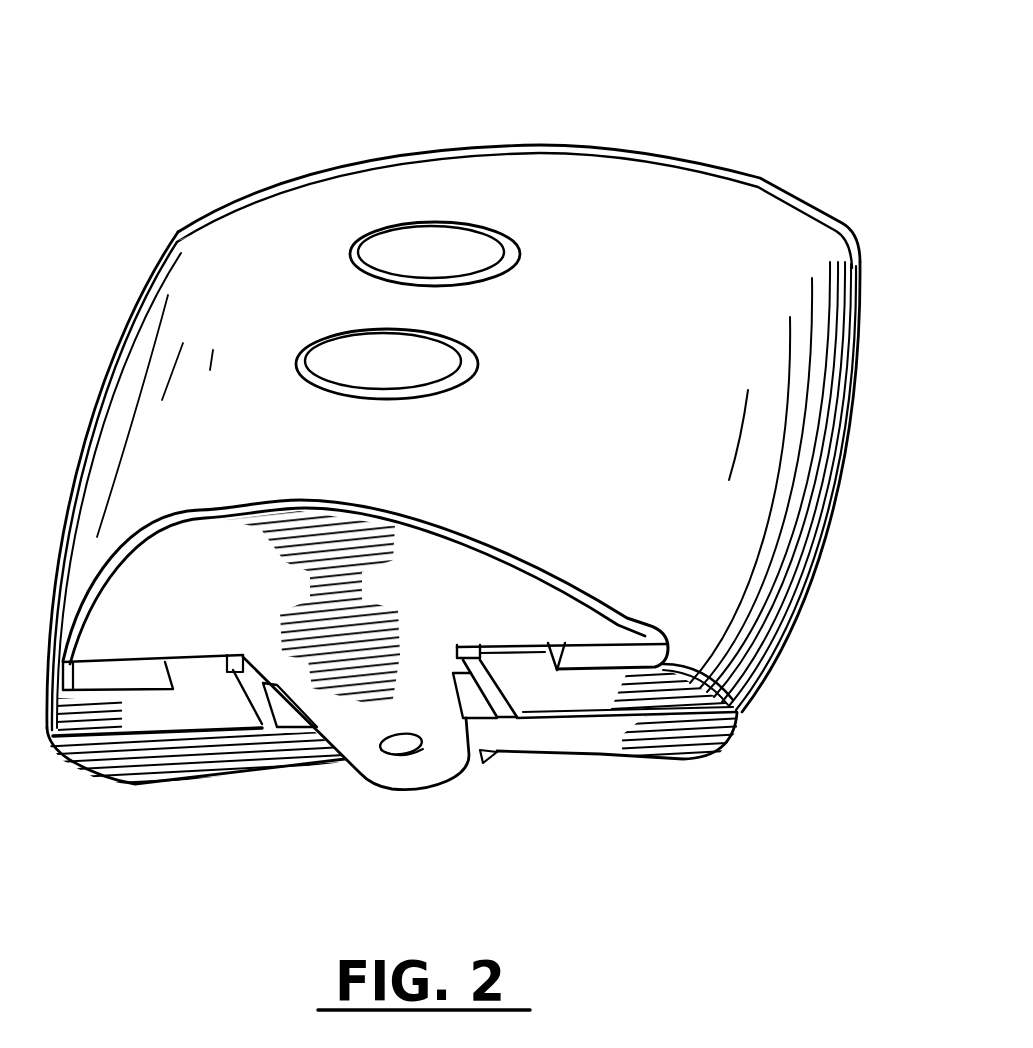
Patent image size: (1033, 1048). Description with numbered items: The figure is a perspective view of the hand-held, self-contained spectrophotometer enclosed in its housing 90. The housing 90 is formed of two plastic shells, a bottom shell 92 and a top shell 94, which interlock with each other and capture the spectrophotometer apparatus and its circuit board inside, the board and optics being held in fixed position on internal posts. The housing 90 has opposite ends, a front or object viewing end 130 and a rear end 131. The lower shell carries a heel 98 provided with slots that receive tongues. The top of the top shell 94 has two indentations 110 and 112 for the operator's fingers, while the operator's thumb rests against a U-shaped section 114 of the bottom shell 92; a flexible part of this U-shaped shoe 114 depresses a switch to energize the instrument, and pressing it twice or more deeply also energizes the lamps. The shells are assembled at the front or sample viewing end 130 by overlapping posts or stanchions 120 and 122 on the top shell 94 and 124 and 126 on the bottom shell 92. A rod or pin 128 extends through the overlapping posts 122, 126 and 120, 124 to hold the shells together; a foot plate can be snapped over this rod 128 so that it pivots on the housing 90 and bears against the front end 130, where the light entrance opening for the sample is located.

The housing 90 is at (95, 345).
The bottom shell 92 is at (683, 740).
The top shell 94 is at (653, 178).
The heel 98 is at (762, 180).
The indentation 110 is at (462, 362).
The indentation 112 is at (490, 252).
The U-shaped section 114 is at (503, 757).
The post or stanchion 120 is at (202, 680).
The post or stanchion 122 is at (533, 693).
The post or stanchion 124 is at (257, 700).
The post or stanchion 126 is at (473, 646).
The rod or pin 128 is at (560, 648).
The front or object viewing end 130 is at (330, 780).
The rear end 131 is at (442, 120).